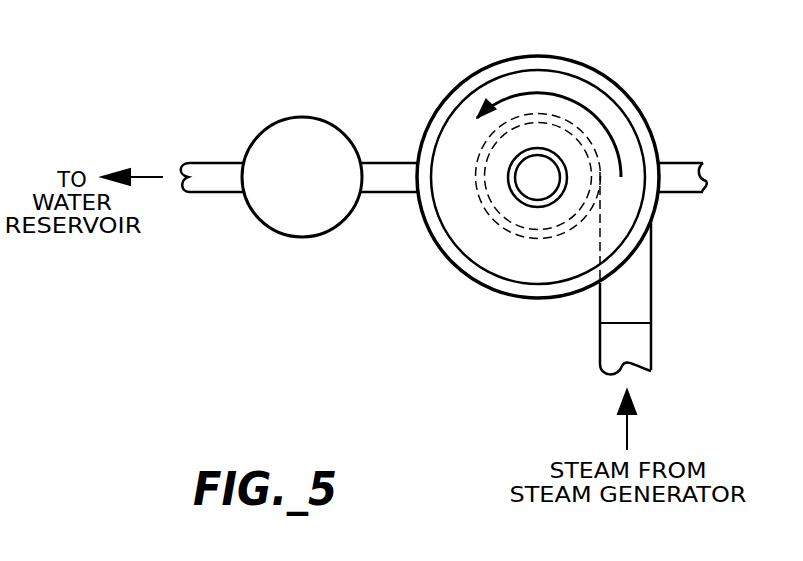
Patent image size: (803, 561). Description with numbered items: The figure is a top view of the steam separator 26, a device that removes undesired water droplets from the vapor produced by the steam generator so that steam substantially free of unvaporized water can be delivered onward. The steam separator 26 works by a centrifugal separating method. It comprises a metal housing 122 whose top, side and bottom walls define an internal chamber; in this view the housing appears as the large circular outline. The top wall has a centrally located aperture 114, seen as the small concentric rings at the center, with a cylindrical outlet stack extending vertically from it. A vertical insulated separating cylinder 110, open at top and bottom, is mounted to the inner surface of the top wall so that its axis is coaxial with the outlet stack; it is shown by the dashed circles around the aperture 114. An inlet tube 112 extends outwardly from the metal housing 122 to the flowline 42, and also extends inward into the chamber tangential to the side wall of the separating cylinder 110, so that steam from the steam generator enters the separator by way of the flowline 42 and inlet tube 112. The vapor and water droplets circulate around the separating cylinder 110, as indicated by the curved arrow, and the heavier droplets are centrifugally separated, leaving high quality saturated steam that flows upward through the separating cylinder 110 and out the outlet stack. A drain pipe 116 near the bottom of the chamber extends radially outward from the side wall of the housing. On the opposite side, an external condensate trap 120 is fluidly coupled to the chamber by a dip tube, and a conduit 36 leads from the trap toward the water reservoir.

The steam separator 26 is at (670, 81).
The return conduit to water reservoir 36 is at (223, 172).
The flowline 42 is at (638, 348).
The separating cylinder 110 is at (483, 143).
The inlet tube 112 is at (639, 298).
The aperture 114 is at (532, 178).
The drain pipe 116 is at (673, 157).
The external condensate trap 120 is at (274, 123).
The metal housing 122 is at (573, 57).